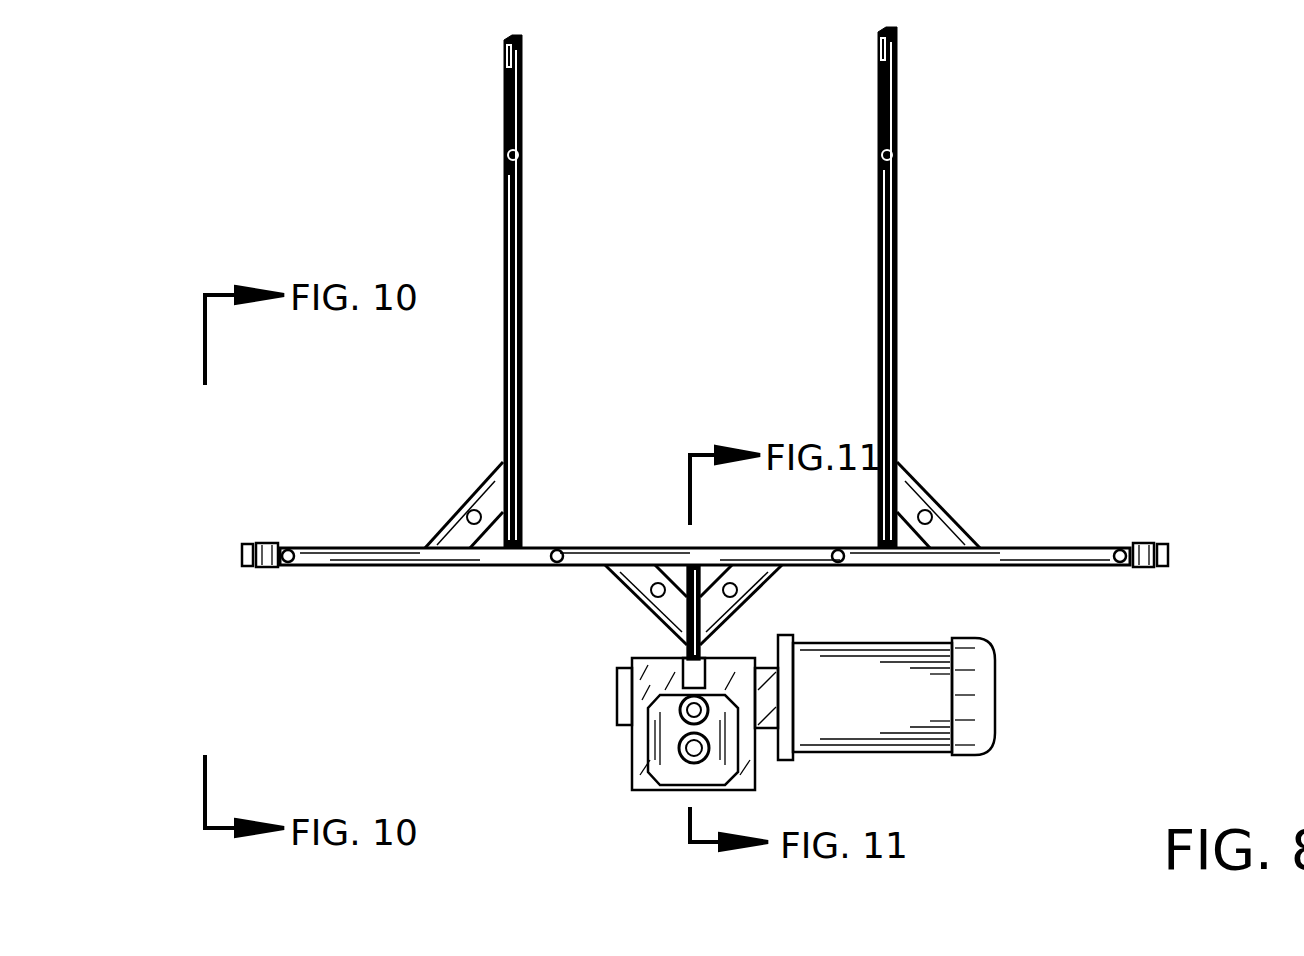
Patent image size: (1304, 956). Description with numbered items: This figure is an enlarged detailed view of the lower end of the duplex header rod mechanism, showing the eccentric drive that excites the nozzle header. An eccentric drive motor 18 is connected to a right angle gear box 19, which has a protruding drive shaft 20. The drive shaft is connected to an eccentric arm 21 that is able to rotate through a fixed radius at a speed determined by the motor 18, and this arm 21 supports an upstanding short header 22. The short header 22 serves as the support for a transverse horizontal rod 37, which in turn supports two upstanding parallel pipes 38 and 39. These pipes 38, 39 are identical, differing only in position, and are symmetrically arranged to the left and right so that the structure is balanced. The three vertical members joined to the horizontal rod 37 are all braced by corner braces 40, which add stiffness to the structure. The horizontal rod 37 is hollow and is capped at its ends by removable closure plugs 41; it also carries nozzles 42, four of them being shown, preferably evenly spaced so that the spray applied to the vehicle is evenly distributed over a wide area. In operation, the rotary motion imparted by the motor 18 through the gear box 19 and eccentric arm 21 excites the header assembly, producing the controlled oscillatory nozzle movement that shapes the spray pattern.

The eccentric drive motor 18 is at (947, 697).
The right angle gear box 19 is at (727, 736).
The drive shaft 20 is at (624, 786).
The eccentric arm 21 is at (621, 741).
The short header 22 is at (596, 634).
The transverse horizontal rod 37 is at (706, 589).
The upstanding parallel pipe 38 is at (564, 291).
The upstanding parallel pipe 39 is at (950, 287).
The corner brace 40 is at (694, 540).
The removable closure plug 41 is at (732, 523).
The nozzle 42 is at (757, 503).